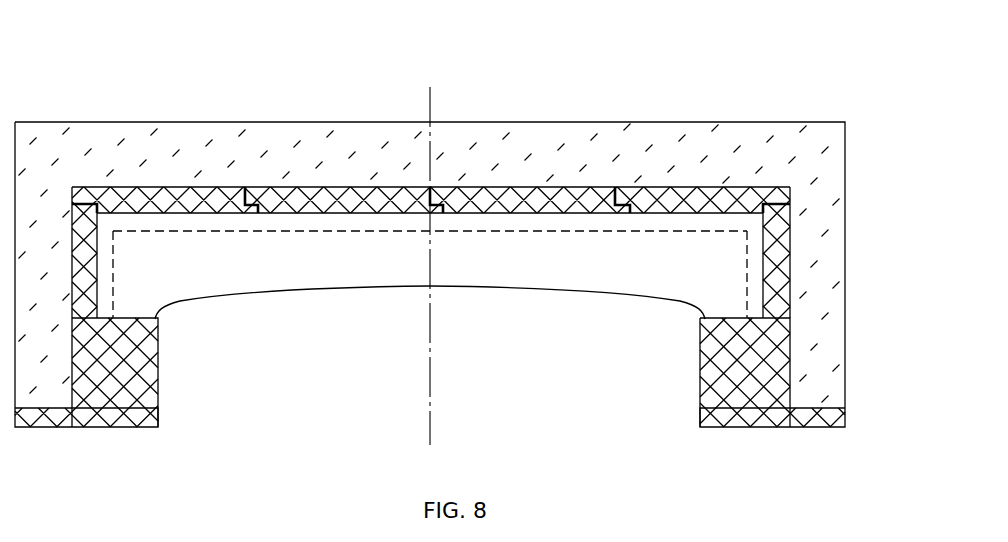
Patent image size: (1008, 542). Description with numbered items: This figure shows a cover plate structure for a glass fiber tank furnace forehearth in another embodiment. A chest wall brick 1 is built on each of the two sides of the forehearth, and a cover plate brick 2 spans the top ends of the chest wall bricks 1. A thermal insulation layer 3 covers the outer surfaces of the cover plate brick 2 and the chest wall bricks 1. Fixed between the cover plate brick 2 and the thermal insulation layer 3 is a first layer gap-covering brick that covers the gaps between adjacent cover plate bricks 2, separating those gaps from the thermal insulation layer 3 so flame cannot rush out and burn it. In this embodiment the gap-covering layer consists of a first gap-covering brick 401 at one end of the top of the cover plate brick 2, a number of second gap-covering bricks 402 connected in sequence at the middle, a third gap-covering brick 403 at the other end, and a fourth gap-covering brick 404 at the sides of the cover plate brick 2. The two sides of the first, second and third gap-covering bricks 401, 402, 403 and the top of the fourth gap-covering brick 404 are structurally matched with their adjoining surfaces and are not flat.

The chest wall brick 1 is at (140, 368).
The cover plate brick 2 is at (290, 267).
The thermal insulation layer 3 is at (295, 155).
The first gap-covering brick 401 is at (162, 200).
The second gap-covering brick 402 is at (502, 198).
The third gap-covering brick 403 is at (687, 198).
The fourth gap-covering brick 404 is at (780, 262).